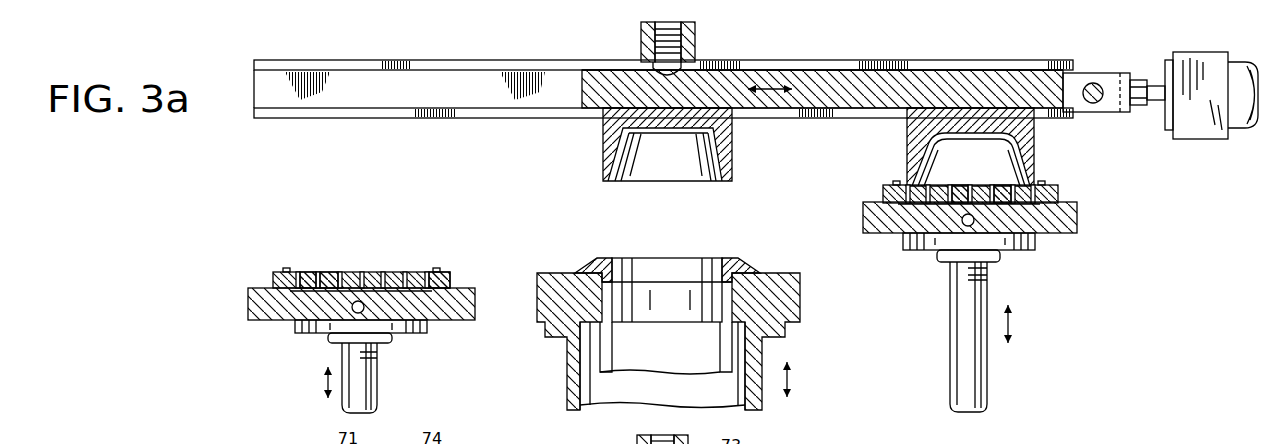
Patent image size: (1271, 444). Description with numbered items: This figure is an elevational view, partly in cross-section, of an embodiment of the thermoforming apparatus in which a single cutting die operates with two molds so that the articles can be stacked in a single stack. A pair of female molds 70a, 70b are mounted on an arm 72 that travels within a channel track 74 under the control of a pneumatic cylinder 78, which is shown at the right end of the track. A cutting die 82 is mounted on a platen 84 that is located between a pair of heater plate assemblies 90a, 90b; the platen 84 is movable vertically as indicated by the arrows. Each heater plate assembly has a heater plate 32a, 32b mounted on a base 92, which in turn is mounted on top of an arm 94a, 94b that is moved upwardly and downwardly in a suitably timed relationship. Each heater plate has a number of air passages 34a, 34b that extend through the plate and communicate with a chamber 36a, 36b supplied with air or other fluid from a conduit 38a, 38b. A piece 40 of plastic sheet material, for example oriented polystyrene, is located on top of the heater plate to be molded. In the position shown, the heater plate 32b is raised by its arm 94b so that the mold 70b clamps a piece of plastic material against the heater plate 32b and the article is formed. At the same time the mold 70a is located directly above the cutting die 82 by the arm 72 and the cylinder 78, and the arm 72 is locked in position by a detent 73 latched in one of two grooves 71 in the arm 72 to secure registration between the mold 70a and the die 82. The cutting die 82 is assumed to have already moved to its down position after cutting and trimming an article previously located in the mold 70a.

The heater plate 32a is at (452, 280).
The heater plate 32b is at (883, 192).
The air passages 34a is at (330, 272).
The air passages 34b is at (1000, 188).
The chamber 36a is at (373, 272).
The chamber 36b is at (1058, 197).
The conduit 38a is at (355, 313).
The conduit 38b is at (975, 232).
The piece of plastic sheet material 40 is at (417, 272).
The female mold 70a is at (733, 152).
The female mold 70b is at (1036, 153).
The grooves 71 is at (661, 73).
The arm 72 is at (827, 76).
The detent 73 is at (683, 36).
The channel track 74 is at (436, 68).
The pneumatic cylinder 78 is at (1208, 125).
The cutting die 82 is at (748, 268).
The platen 84 is at (800, 292).
The heater plate assembly 90a is at (243, 305).
The heater plate assembly 90b is at (1082, 229).
The base 92 is at (893, 226).
The arm 94a is at (374, 380).
The arm 94b is at (958, 342).